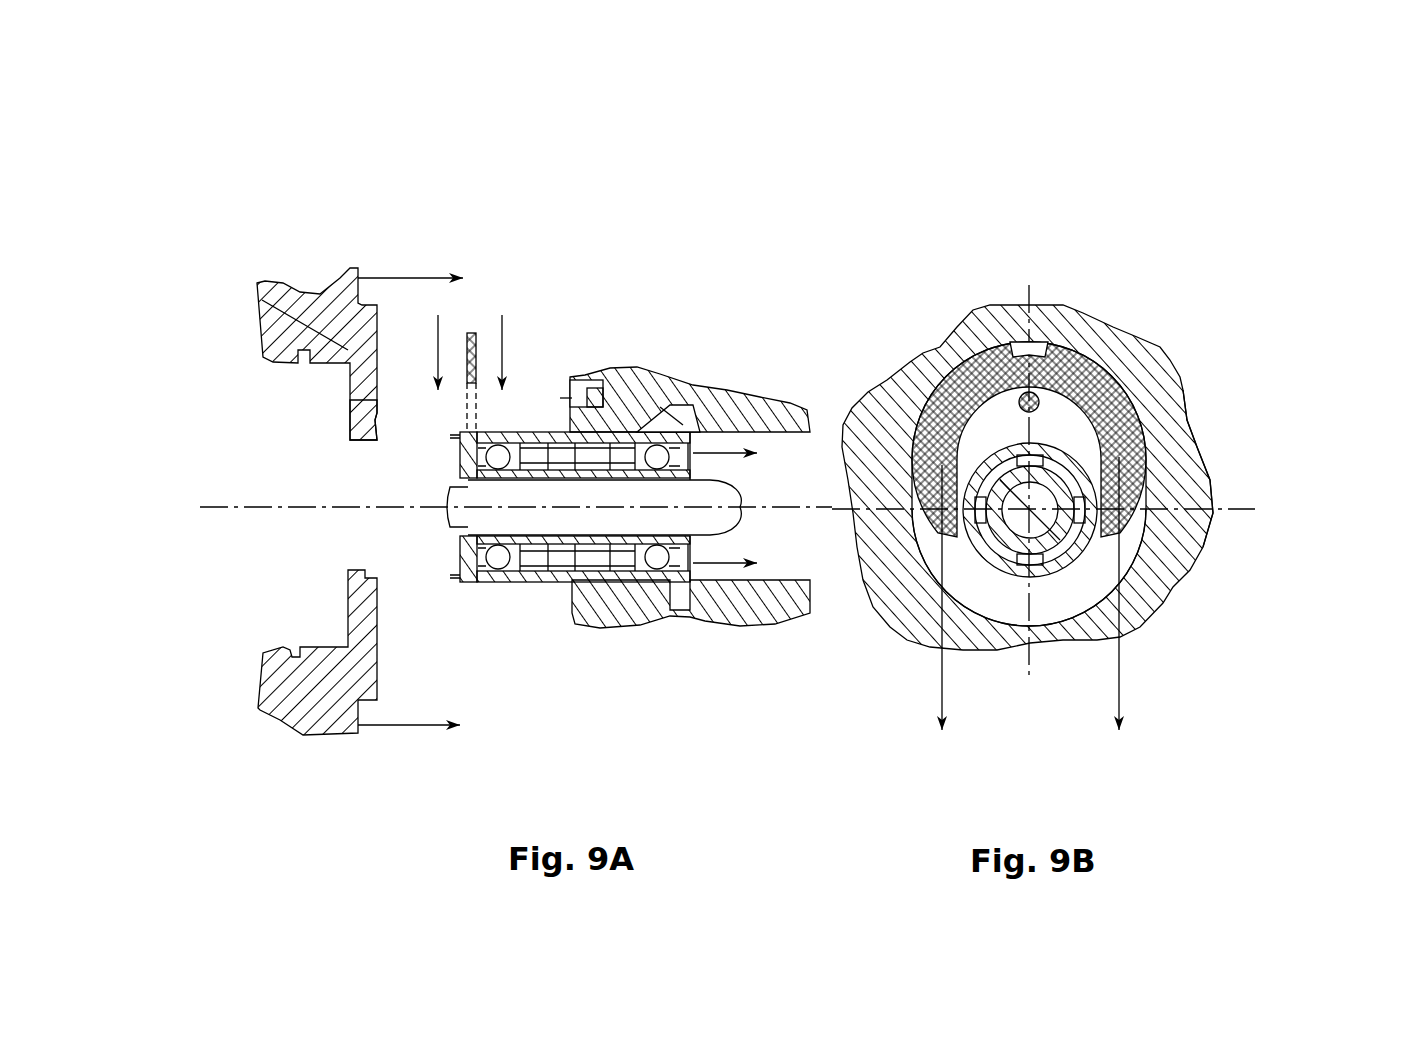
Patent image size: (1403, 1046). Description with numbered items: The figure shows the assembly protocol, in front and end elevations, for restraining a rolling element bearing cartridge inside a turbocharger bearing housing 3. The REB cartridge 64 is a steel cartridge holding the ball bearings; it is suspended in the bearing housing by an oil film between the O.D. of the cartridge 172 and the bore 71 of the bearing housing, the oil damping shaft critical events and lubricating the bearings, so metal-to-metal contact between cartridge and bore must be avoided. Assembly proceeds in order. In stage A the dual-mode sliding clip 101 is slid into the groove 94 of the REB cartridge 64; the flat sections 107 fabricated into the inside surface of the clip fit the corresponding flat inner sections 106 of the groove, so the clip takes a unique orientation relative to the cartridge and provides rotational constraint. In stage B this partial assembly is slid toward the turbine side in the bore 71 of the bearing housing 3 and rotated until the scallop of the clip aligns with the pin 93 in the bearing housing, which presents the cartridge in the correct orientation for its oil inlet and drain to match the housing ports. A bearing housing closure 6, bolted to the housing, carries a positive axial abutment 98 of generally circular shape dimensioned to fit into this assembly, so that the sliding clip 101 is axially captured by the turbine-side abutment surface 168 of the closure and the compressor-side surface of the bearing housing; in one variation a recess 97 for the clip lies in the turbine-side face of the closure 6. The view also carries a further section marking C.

In FIG. 9A, the bearing housing 3 is at (790, 400).
In FIG. 9B, the bearing housing 3 is at (908, 387).
In FIG. 9A, the bearing housing closure 6 is at (318, 697).
In FIG. 9B, the REB cartridge 64 is at (1069, 447).
In FIG. 9A, the bore 71 is at (710, 457).
In FIG. 9A, the pin 93 is at (600, 375).
In FIG. 9A, the groove 94 is at (473, 580).
In FIG. 9A, the recess 97 is at (568, 585).
In FIG. 9B, the recess 97 is at (1093, 574).
In FIG. 9A, the abutment 98 is at (257, 283).
In FIG. 9A, the dual-mode sliding clip 101 is at (473, 330).
In FIG. 9B, the dual-mode sliding clip 101 is at (1003, 360).
In FIG. 9B, the flat inner sections 106 is at (1048, 440).
In FIG. 9B, the flat sections 107 is at (1178, 395).
In FIG. 9A, the turbine-side abutment surface 168 is at (378, 413).
In FIG. 9A, the O.D. of the cartridge 172 is at (517, 583).
In FIG. 9A, the stage A is at (507, 343).
In FIG. 9A, the stage B is at (723, 447).
In FIG. 9A, the section C is at (418, 278).